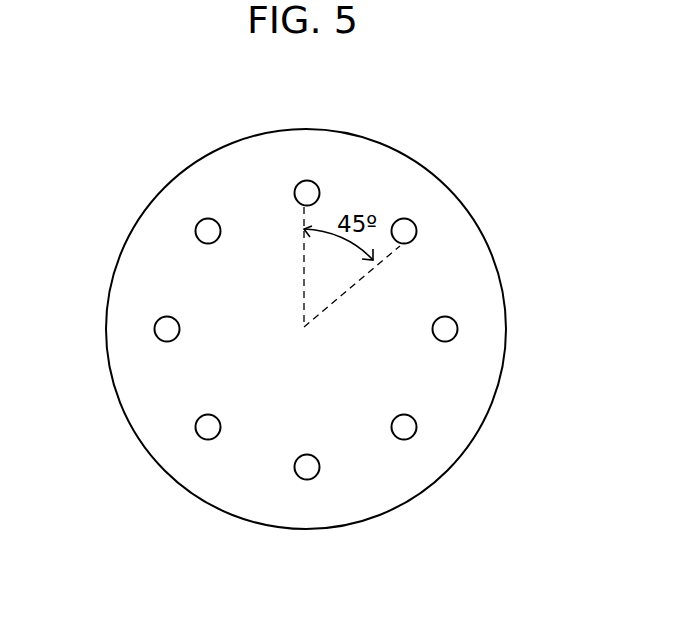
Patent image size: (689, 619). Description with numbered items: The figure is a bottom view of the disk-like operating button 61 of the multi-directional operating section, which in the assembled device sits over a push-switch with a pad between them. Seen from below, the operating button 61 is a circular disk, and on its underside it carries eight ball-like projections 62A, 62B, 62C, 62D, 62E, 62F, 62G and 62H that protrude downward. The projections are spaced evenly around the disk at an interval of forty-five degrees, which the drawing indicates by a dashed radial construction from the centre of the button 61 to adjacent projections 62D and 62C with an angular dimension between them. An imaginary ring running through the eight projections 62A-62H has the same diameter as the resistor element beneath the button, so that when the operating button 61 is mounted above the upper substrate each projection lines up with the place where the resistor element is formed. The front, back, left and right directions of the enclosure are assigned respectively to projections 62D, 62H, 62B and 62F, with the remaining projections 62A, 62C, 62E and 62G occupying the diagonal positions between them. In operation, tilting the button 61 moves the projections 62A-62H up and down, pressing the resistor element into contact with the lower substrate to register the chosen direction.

The operating button 61 is at (380, 175).
The ball-like projection 62A is at (414, 436).
The ball-like projection 62B is at (457, 327).
The ball-like projection 62C is at (415, 225).
The ball-like projection 62D is at (301, 182).
The ball-like projection 62E is at (199, 222).
The ball-like projection 62F is at (155, 326).
The ball-like projection 62G is at (199, 437).
The ball-like projection 62H is at (304, 480).